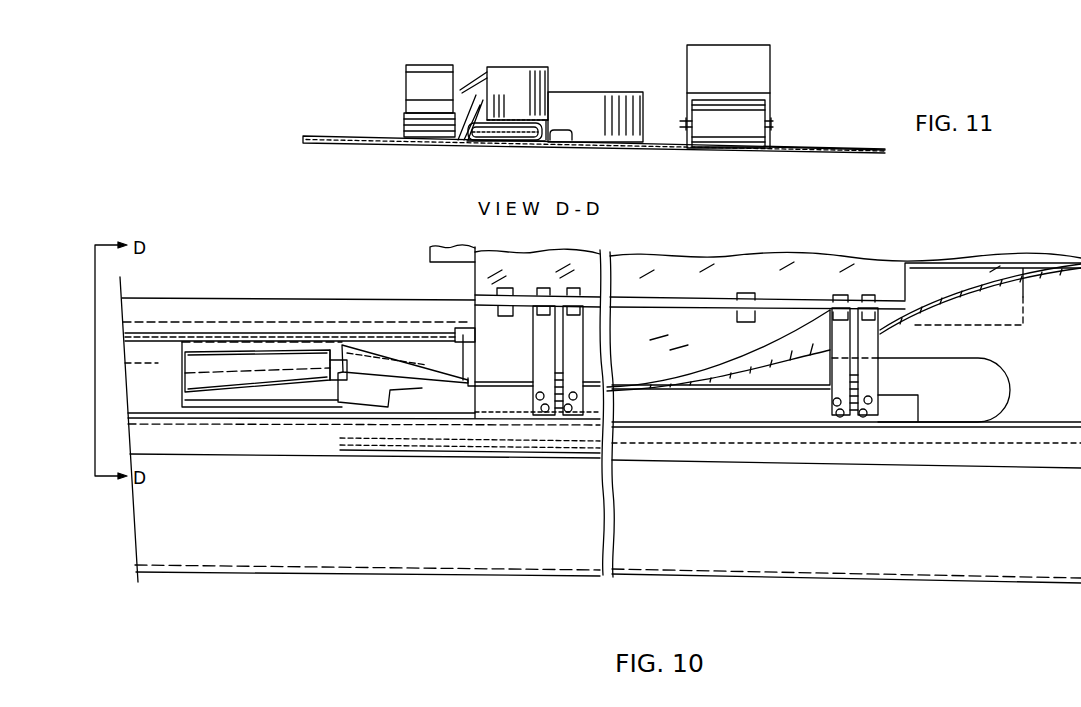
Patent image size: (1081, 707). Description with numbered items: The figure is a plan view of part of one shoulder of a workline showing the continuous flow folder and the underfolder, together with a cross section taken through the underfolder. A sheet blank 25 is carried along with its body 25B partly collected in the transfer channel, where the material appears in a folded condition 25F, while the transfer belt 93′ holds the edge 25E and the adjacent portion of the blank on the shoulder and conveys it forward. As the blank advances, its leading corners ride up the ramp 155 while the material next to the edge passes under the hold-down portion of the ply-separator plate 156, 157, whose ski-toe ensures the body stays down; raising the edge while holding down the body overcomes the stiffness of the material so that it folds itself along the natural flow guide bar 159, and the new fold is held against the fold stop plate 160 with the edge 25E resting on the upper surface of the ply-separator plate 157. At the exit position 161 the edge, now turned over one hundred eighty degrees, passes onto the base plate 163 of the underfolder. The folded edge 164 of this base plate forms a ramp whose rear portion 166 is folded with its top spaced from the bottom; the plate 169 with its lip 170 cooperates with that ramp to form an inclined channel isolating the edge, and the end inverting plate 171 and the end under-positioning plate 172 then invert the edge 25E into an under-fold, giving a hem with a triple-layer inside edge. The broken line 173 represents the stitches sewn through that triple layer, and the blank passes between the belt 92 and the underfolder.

In FIG. 11, the sheet blank 25 is at (786, 147).
In FIG. 10, the sheet blank body 25B is at (738, 532).
In FIG. 11, the sheet blank edge 25E is at (480, 143).
In FIG. 10, the sheet blank edge 25E is at (1036, 270).
In FIG. 11, the fold 25F is at (302, 137).
In FIG. 10, the fold 25F is at (230, 299).
In FIG. 11, the belt 92 is at (404, 104).
In FIG. 10, the belt 92 is at (316, 327).
In FIG. 11, the transfer belt 93′ is at (770, 109).
In FIG. 10, the transfer belt 93′ is at (158, 430).
In FIG. 10, the ramp 155 is at (946, 266).
In FIG. 10, the ply-separator plate 156 is at (950, 408).
In FIG. 10, the ply-separator plate 157 is at (525, 395).
In FIG. 10, the natural flow guide bar 159 is at (785, 328).
In FIG. 10, the fold stop plate 160 is at (476, 299).
In FIG. 10, the exit position 161 is at (478, 395).
In FIG. 11, the base plate 163 is at (533, 143).
In FIG. 10, the base plate 163 is at (275, 400).
In FIG. 11, the folded edge 164 is at (470, 145).
In FIG. 11, the rear portion of base plate 166 is at (470, 88).
In FIG. 10, the plate 169 is at (425, 395).
In FIG. 10, the lip 170 is at (362, 395).
In FIG. 11, the end inverting plate 171 is at (663, 138).
In FIG. 10, the end inverting plate 171 is at (330, 385).
In FIG. 11, the end under-positioning plate 172 is at (560, 143).
In FIG. 10, the end under-positioning plate 172 is at (217, 387).
In FIG. 10, the stitches 173 is at (145, 363).